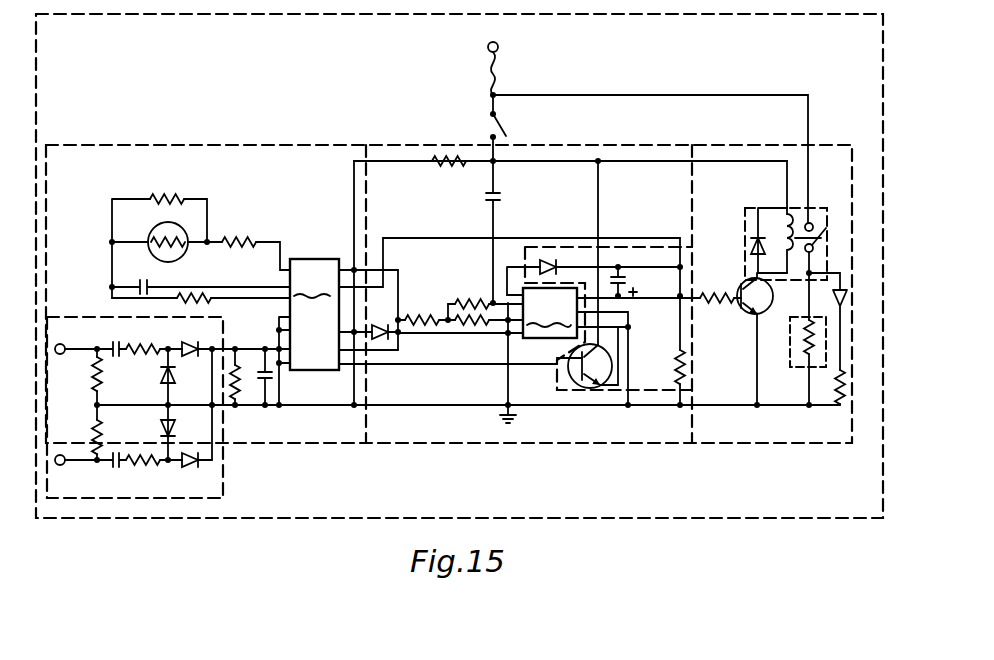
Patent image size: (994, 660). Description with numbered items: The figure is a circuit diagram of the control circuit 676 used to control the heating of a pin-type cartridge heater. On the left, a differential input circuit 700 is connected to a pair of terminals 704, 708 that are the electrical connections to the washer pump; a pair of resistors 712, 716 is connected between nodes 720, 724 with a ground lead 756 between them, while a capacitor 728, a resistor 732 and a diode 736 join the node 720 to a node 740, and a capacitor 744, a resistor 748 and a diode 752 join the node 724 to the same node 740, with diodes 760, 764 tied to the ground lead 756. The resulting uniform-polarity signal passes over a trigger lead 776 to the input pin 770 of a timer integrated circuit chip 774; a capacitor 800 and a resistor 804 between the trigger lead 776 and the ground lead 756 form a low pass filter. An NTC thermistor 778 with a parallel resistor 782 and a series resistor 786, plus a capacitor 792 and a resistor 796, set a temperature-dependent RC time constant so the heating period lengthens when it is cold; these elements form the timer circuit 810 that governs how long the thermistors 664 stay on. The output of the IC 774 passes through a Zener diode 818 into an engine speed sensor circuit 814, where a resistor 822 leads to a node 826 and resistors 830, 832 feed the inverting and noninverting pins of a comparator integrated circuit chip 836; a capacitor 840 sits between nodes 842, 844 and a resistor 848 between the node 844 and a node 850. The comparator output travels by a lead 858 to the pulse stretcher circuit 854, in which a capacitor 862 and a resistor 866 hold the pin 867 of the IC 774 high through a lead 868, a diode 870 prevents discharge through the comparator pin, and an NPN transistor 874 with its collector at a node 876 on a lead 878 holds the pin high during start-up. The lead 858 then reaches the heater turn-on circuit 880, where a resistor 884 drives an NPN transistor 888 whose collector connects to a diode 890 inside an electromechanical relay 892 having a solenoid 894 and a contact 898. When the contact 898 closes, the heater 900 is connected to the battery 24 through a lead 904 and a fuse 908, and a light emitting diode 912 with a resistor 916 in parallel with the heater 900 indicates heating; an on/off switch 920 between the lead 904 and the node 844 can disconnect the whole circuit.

The control circuit 676 is at (306, 44).
The timer circuit 810 is at (255, 172).
The engine speed sensor circuit 814 is at (466, 146).
The differential input circuit 700 is at (222, 453).
The pulse stretcher circuit 854 is at (604, 388).
The heater turn-on circuit 880 is at (704, 440).
The battery 24 is at (518, 35).
The fuse 908 is at (497, 74).
The lead 904 is at (613, 94).
The on/off switch 920 is at (500, 124).
The node 876 is at (597, 150).
The lead 878 is at (604, 165).
The resistor 848 is at (436, 168).
The node 844 is at (496, 168).
The capacitor 840 is at (485, 197).
The resistor 782 is at (158, 196).
The negative temperature coefficient thermistor 778 is at (152, 230).
The resistor 786 is at (240, 240).
The capacitor 792 is at (150, 274).
The resistor 796 is at (190, 296).
The timer integrated circuit chip 774 is at (314, 314).
The pin 867 is at (338, 280).
The input pin 770 is at (438, 347).
The node 850 is at (352, 265).
The trigger lead 776 is at (224, 348).
The node 740 is at (214, 346).
The resistor 804 is at (254, 390).
The capacitor 800 is at (272, 379).
The ground lead 756 is at (112, 409).
The node 720 is at (75, 342).
The terminal 704 is at (76, 377).
The resistor 712 is at (94, 392).
The resistor 716 is at (94, 422).
The terminal 708 is at (76, 434).
The capacitor 728 is at (115, 349).
The resistor 732 is at (139, 363).
The diode 736 is at (184, 348).
The diode 760 is at (162, 380).
The diode 764 is at (187, 434).
The node 724 is at (100, 450).
The capacitor 744 is at (112, 467).
The resistor 748 is at (146, 467).
The diode 752 is at (190, 467).
The Zener diode 818 is at (380, 342).
The resistor 822 is at (432, 318).
The node 826 is at (440, 325).
The resistor 830 is at (456, 304).
The resistor 832 is at (470, 324).
The node 842 is at (490, 300).
The integrated circuit chip 836 is at (550, 313).
The diode 870 is at (548, 260).
The lead 868 is at (611, 237).
The capacitor 862 is at (630, 272).
The lead 858 is at (628, 301).
The resistor 866 is at (678, 360).
The NPN transistor 874 is at (565, 380).
The resistor 884 is at (712, 288).
The NPN transistor 888 is at (739, 306).
The electromechanical relay 892 is at (745, 212).
The diode 890 is at (750, 248).
The solenoid 894 is at (786, 212).
The contact 898 is at (826, 236).
The light emitting diode 912 is at (837, 300).
The resistor 916 is at (838, 386).
The thermistors 664 is at (792, 348).
The heater 900 is at (767, 375).